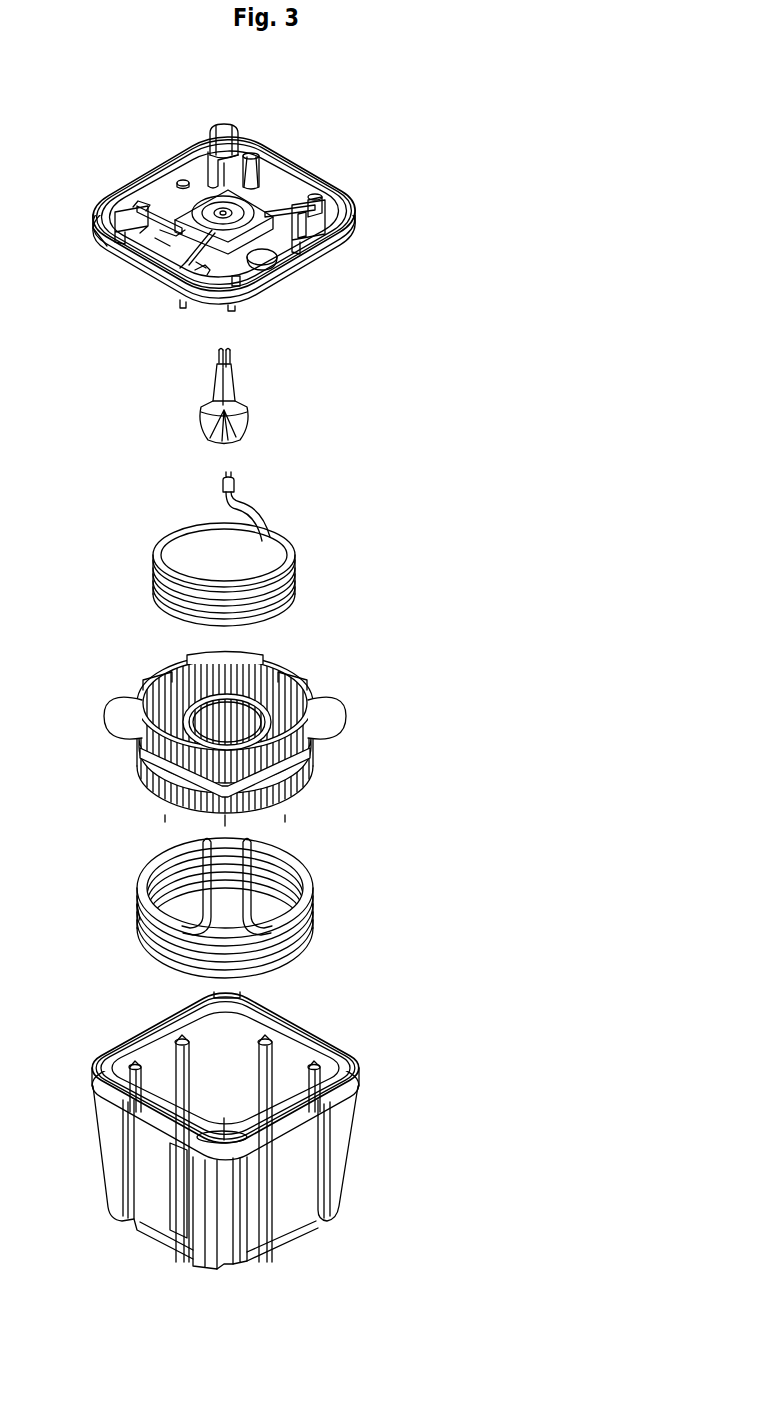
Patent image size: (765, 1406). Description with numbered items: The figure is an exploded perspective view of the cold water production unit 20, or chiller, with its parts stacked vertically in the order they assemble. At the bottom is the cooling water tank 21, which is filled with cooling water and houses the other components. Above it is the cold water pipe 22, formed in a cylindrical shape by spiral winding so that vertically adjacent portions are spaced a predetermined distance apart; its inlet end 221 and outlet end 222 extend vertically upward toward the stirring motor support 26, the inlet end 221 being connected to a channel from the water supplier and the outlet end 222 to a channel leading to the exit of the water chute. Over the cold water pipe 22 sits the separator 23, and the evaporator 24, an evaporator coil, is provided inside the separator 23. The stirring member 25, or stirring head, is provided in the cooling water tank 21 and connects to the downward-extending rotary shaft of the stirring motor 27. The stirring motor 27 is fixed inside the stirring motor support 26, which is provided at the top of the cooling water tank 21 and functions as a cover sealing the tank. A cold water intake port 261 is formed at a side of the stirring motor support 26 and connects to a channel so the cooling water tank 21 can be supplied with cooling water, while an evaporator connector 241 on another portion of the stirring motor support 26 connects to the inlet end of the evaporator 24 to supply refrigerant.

The cold water production unit 20 is at (444, 132).
The cooling water tank 21 is at (343, 1115).
The cold water pipe 22 is at (313, 889).
The inlet end 221 is at (313, 926).
The outlet end 222 is at (138, 915).
The separator 23 is at (334, 716).
The evaporator 24 is at (296, 559).
The evaporator connector 241 is at (225, 133).
The stirring member 25 is at (243, 428).
The stirring motor support 26 is at (355, 209).
The cold water intake port 261 is at (99, 248).
The stirring motor 27 is at (260, 213).